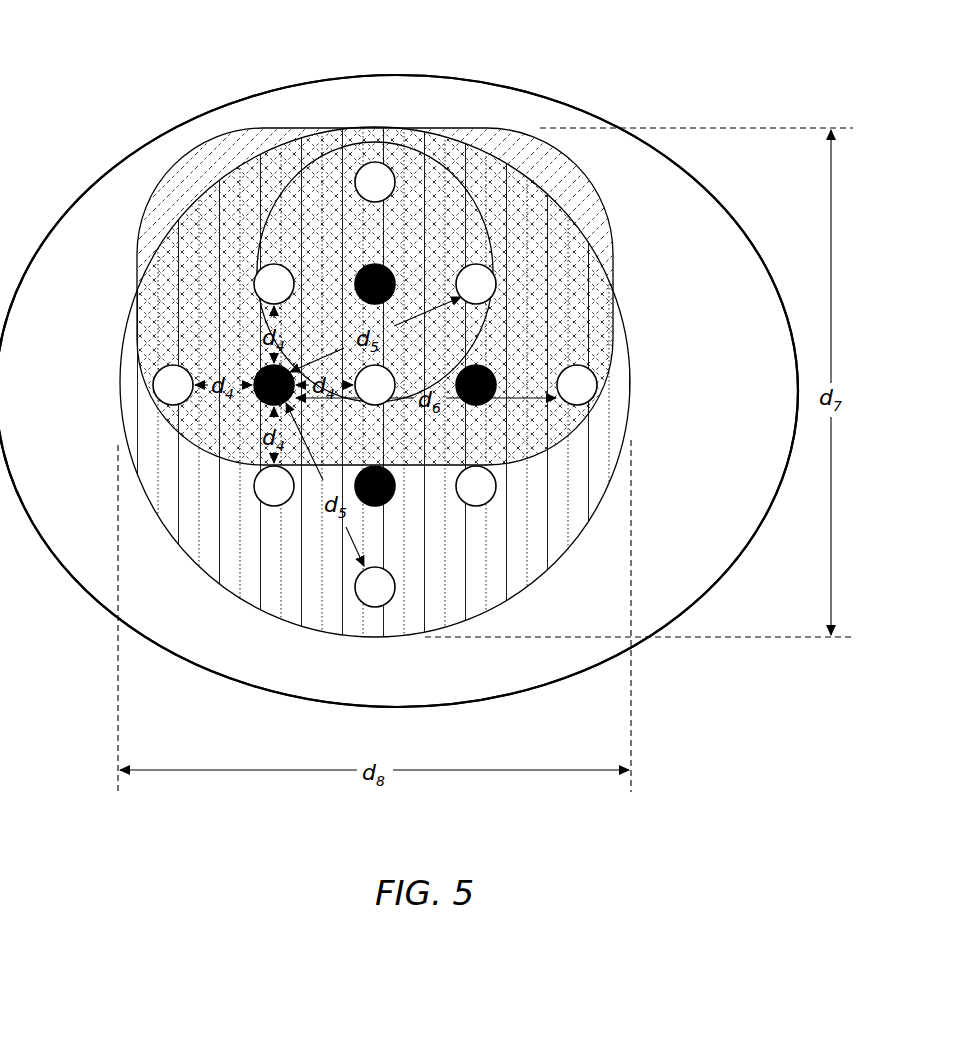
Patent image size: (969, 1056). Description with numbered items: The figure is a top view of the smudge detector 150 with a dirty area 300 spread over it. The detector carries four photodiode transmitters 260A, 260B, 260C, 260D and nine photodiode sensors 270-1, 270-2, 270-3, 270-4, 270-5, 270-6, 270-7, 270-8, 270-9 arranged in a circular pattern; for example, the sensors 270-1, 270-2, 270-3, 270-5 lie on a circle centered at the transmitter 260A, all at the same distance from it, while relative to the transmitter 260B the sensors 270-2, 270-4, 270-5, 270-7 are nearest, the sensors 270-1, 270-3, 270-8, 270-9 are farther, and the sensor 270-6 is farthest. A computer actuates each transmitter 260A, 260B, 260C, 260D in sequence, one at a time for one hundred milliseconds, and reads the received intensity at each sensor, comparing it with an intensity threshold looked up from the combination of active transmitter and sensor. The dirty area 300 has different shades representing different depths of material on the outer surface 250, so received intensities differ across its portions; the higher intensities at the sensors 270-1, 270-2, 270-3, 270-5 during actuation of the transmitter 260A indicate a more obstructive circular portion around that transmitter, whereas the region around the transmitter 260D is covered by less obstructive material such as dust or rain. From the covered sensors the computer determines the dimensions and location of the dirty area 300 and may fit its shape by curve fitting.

The smudge detector 150 is at (141, 104).
The outer surface 250 is at (685, 240).
The dirty area 300 is at (479, 124).
The photodiode sensor 270-1 is at (371, 162).
The photodiode sensor 270-2 is at (266, 266).
The photodiode sensor 270-3 is at (485, 266).
The photodiode sensor 270-4 is at (161, 398).
The photodiode sensor 270-5 is at (393, 381).
The photodiode sensor 270-6 is at (591, 398).
The photodiode sensor 270-7 is at (265, 503).
The photodiode sensor 270-8 is at (487, 503).
The photodiode sensor 270-9 is at (370, 606).
The photodiode transmitter 260A is at (366, 266).
The photodiode transmitter 260B is at (262, 370).
The photodiode transmitter 260C is at (490, 399).
The photodiode transmitter 260D is at (386, 503).